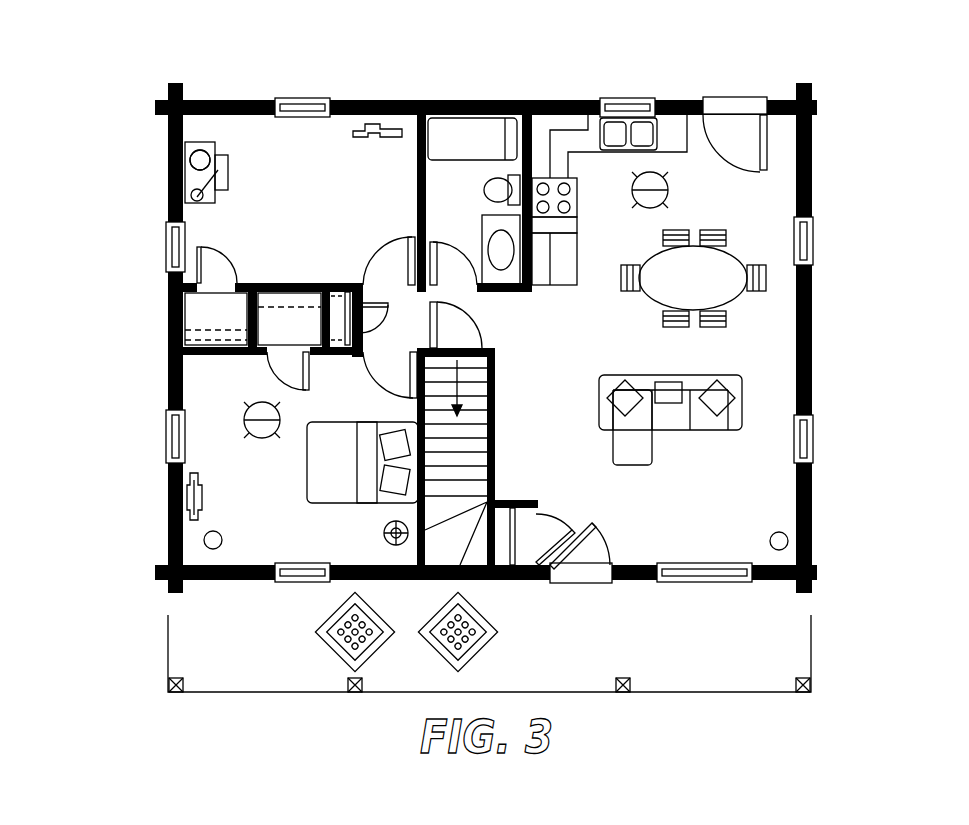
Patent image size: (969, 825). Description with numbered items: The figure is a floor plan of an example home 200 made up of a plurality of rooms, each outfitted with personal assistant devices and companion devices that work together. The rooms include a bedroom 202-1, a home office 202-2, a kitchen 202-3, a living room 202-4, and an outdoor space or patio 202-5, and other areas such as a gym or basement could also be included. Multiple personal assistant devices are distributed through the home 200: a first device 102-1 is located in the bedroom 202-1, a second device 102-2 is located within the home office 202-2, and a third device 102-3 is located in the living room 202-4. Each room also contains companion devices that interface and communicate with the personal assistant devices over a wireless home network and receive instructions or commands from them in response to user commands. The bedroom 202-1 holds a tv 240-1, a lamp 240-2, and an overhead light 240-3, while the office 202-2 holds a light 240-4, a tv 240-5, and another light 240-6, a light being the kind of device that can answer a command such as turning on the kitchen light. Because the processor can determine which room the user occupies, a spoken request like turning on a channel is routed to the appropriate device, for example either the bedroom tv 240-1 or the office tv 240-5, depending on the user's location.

The home 200 is at (134, 126).
The first device 102-1 is at (204, 538).
The second device 102-2 is at (200, 150).
The third device 102-3 is at (788, 543).
The bedroom 202-1 is at (272, 453).
The home office 202-2 is at (337, 157).
The kitchen 202-3 is at (696, 197).
The living room 202-4 is at (695, 458).
The outdoor space or patio 202-5 is at (263, 633).
The tv 240-1 is at (200, 500).
The lamp 240-2 is at (383, 535).
The overhead light 240-3 is at (247, 418).
The light 240-4 is at (195, 193).
The tv 240-5 is at (375, 130).
The light 240-6 is at (650, 172).